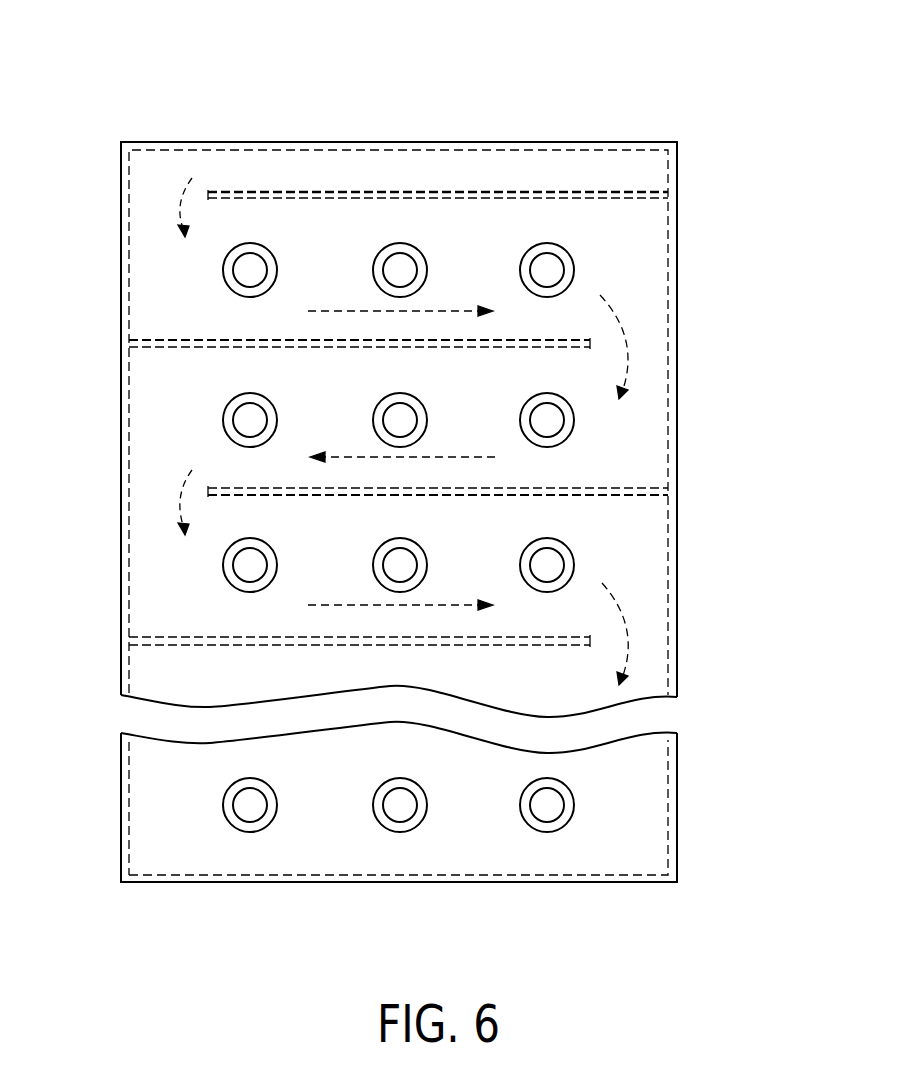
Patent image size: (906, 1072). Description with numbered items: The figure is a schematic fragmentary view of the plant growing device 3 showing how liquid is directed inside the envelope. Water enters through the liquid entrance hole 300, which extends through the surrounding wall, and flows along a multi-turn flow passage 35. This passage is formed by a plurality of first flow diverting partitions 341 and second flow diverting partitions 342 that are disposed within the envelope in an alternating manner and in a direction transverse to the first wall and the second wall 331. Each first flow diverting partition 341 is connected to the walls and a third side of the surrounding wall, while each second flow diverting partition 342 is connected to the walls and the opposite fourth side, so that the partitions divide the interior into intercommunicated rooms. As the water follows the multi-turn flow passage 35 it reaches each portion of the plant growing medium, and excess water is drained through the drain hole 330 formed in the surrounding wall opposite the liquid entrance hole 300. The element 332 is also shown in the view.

The plant growing device 3 is at (531, 112).
The liquid entrance hole 300 is at (372, 186).
The first flow diverting partitions 341 is at (582, 198).
The second flow diverting partitions 342 is at (190, 340).
The multi-turn flow passage 35 is at (622, 236).
The through hole 332 is at (548, 420).
The second wall 331 is at (648, 630).
The drain hole 330 is at (527, 882).